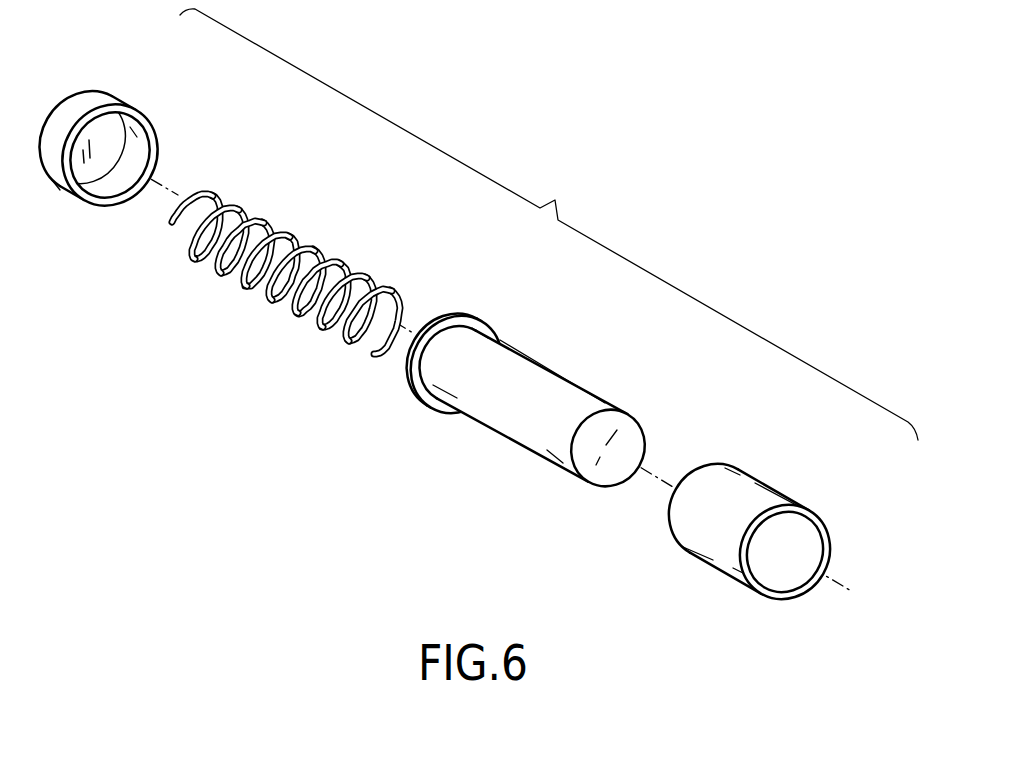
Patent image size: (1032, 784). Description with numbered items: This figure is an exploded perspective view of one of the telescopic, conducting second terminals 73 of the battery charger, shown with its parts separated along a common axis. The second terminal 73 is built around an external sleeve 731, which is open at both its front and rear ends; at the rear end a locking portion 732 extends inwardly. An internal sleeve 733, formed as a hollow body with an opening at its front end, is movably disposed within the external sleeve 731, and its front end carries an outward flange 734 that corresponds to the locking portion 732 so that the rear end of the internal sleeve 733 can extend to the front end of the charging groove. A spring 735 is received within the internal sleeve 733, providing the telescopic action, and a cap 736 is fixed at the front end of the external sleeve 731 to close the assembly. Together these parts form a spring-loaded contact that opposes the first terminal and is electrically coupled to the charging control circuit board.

The second terminal 73 is at (549, 224).
The external sleeve 731 is at (743, 492).
The locking portion 732 is at (832, 532).
The internal sleeve 733 is at (542, 387).
The outward flange 734 is at (450, 312).
The spring 735 is at (295, 242).
The cap 736 is at (108, 104).